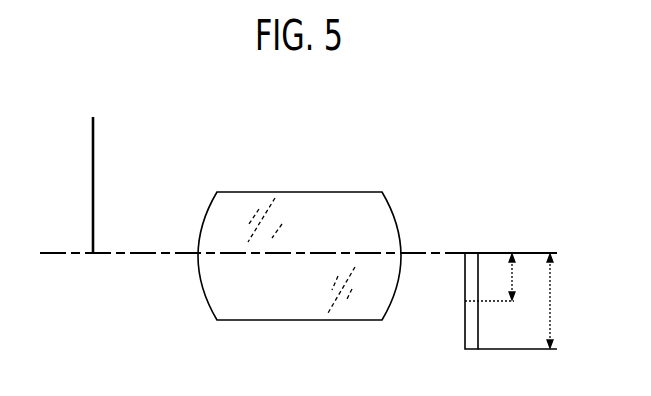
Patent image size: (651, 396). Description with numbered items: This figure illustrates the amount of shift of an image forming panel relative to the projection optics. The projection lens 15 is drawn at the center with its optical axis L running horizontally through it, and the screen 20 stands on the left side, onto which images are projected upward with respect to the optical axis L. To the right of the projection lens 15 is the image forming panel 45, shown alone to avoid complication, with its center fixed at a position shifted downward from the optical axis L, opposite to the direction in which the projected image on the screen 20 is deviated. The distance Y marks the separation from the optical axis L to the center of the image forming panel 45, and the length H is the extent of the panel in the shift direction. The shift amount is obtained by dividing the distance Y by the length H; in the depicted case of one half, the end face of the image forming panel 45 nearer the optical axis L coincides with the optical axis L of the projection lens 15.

The projection lens 15 is at (290, 192).
The screen 20 is at (95, 125).
The image forming panel 45 is at (471, 260).
The optical axis L is at (119, 256).
The distance Y is at (490, 277).
The length H is at (540, 301).